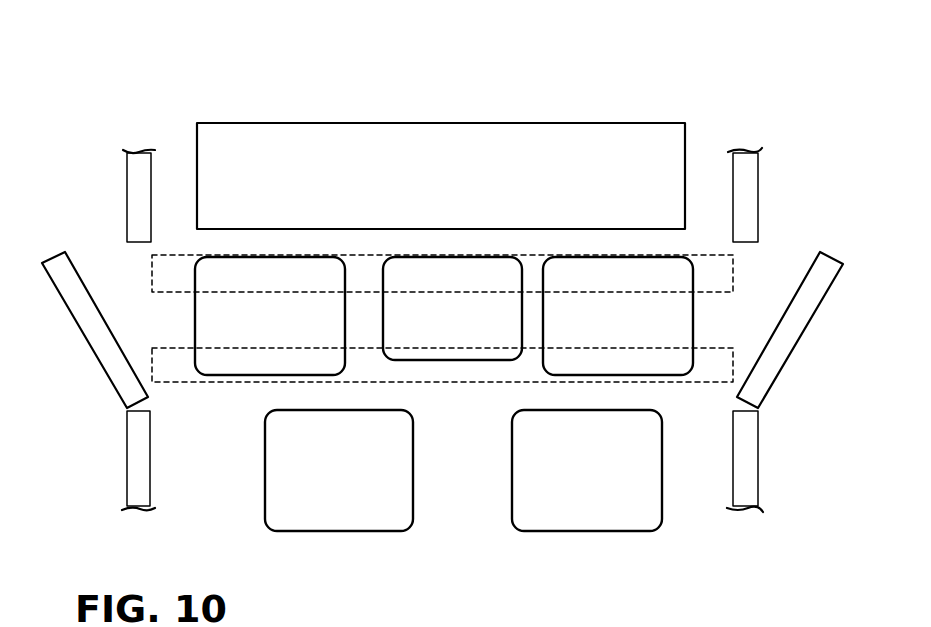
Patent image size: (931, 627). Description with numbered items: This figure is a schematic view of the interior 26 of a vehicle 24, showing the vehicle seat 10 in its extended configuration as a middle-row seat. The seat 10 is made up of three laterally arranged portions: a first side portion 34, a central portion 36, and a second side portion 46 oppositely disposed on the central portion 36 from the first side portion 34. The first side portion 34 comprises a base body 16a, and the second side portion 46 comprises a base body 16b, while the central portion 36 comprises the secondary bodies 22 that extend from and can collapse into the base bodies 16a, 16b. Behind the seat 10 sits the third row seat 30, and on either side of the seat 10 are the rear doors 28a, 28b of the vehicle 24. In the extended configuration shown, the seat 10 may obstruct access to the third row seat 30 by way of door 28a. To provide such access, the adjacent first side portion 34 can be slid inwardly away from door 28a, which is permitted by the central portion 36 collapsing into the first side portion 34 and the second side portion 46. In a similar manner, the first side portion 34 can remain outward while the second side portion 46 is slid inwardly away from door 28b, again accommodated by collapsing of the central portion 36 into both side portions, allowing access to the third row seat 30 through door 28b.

The vehicle seat 10 is at (442, 304).
The base body 16a is at (598, 328).
The base body 16b is at (248, 328).
The secondary body 22 is at (430, 328).
The vehicle 24 is at (751, 174).
The interior 26 is at (699, 169).
The door 28a is at (785, 308).
The door 28b is at (105, 247).
The third row seat 30 is at (427, 181).
The first side portion 34 is at (605, 229).
The central portion 36 is at (430, 223).
The second side portion 46 is at (270, 232).